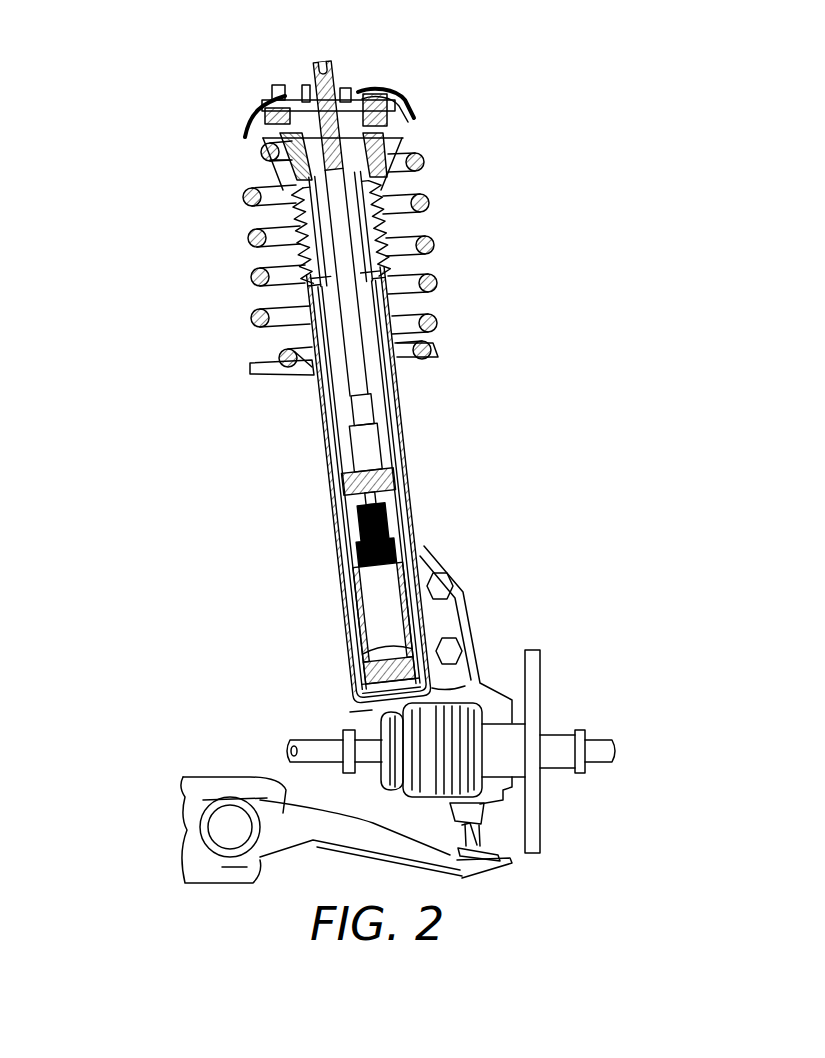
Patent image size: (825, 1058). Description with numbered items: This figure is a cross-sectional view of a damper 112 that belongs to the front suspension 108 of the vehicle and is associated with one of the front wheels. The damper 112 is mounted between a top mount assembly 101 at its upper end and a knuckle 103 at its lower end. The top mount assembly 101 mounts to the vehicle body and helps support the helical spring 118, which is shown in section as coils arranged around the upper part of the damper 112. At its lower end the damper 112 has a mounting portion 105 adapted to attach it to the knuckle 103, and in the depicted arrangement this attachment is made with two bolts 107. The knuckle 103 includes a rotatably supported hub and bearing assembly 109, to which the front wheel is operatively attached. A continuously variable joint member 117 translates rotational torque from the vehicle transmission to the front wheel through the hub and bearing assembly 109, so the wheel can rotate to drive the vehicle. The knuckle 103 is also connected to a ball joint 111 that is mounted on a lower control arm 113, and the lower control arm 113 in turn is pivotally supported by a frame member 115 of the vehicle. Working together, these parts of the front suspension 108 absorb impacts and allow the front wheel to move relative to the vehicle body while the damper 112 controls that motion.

The top mount assembly 101 is at (263, 80).
The front suspension 108 is at (700, 128).
The helical spring 118 is at (424, 160).
The damper 112 is at (408, 420).
The mounting portion 105 is at (422, 552).
The bolts 107 is at (447, 650).
The knuckle 103 is at (565, 668).
The continuously variable joint member 117 is at (360, 733).
The lower control arm 113 is at (285, 813).
The hub and bearing assembly 109 is at (612, 750).
The frame member 115 is at (230, 832).
The ball joint 111 is at (470, 830).